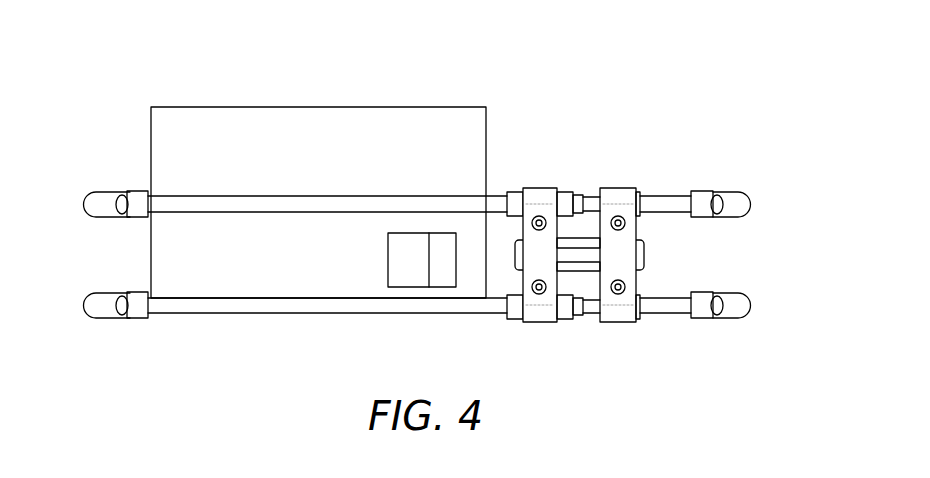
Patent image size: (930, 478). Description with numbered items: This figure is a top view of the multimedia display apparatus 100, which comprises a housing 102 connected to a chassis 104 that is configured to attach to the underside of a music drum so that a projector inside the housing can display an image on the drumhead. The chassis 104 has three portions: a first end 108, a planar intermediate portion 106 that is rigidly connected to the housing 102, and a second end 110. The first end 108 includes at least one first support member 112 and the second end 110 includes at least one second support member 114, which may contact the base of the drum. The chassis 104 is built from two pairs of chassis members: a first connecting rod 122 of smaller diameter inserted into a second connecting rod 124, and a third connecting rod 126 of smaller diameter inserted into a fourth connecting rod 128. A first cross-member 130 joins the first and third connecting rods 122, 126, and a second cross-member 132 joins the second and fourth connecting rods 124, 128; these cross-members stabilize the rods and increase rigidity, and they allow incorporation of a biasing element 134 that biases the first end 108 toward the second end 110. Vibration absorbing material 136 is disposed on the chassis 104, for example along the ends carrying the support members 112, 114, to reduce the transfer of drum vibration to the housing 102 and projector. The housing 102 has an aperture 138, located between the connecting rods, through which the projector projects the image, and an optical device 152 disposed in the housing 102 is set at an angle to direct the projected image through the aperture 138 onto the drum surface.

The multimedia display apparatus 100 is at (631, 57).
The housing 102 is at (238, 107).
The chassis 104 is at (691, 131).
The planar intermediate portion 106 is at (275, 306).
The first end 108 is at (77, 204).
The second end 110 is at (774, 227).
The first support member 112 is at (106, 217).
The second support member 114 is at (733, 216).
The first connecting rod 122 is at (590, 312).
The second connecting rod 124 is at (577, 313).
The third connecting rod 126 is at (592, 196).
The fourth connecting rod 128 is at (580, 196).
The first cross-member 130 is at (628, 188).
The second cross-member 132 is at (546, 188).
The biasing element 134 is at (647, 255).
The vibration absorbing material 136 is at (130, 198).
The aperture 138 is at (400, 273).
The optical device 152 is at (440, 270).